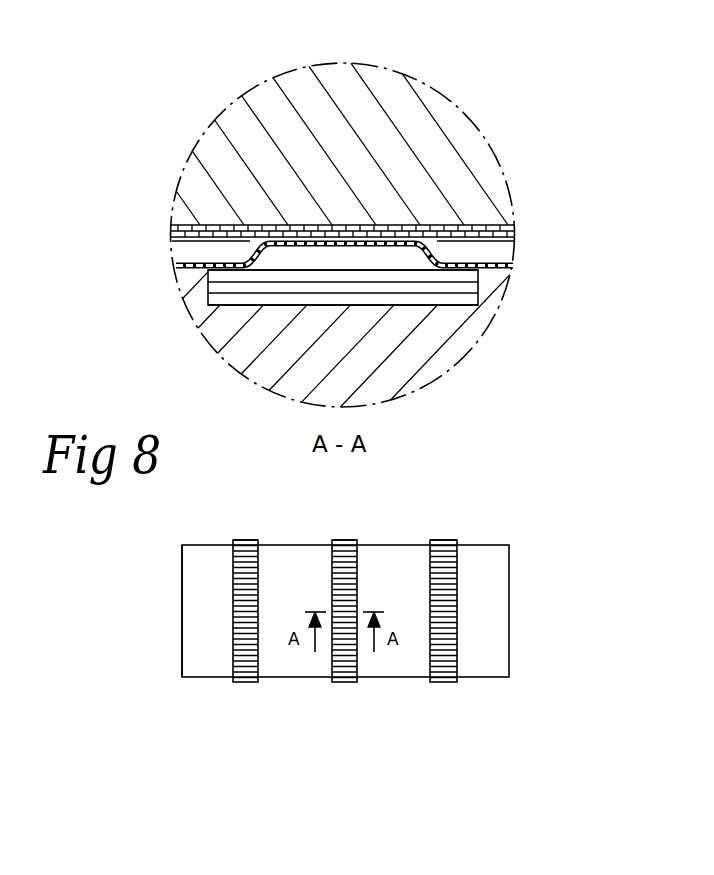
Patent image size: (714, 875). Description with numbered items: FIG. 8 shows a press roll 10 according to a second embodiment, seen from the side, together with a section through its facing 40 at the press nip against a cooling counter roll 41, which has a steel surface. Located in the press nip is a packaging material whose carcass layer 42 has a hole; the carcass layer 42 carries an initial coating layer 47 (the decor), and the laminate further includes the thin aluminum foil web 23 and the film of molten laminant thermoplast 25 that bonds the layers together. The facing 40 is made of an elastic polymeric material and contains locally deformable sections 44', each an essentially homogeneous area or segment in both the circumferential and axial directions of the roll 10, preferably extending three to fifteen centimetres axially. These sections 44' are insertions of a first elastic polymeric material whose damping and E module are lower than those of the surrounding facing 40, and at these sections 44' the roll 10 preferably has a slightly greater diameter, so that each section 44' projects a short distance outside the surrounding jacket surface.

The press roll 10 is at (493, 662).
The aluminum foil web 23 is at (517, 228).
The laminant thermoplast film 25 is at (516, 241).
The facing 40 is at (450, 355).
The cooling counter roll 41 is at (435, 120).
The carcass layer 42 is at (507, 250).
The locally deformable section 44' is at (389, 508).
The initial coating layer 47 is at (512, 268).